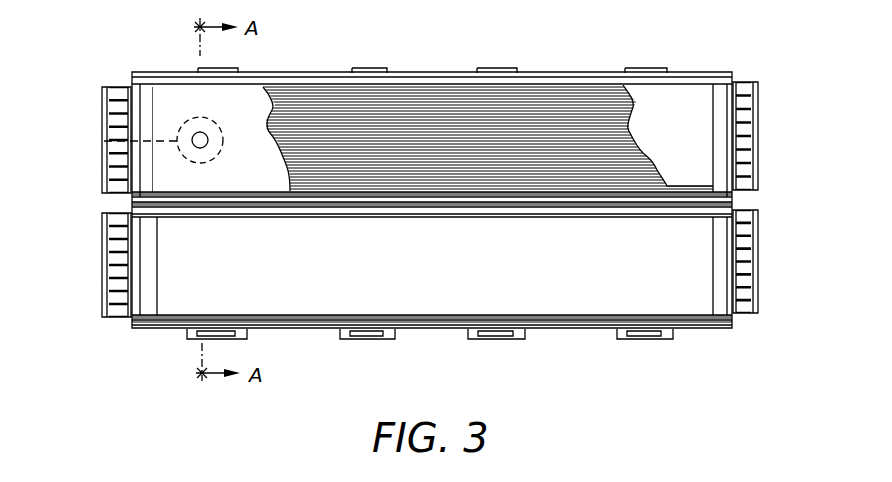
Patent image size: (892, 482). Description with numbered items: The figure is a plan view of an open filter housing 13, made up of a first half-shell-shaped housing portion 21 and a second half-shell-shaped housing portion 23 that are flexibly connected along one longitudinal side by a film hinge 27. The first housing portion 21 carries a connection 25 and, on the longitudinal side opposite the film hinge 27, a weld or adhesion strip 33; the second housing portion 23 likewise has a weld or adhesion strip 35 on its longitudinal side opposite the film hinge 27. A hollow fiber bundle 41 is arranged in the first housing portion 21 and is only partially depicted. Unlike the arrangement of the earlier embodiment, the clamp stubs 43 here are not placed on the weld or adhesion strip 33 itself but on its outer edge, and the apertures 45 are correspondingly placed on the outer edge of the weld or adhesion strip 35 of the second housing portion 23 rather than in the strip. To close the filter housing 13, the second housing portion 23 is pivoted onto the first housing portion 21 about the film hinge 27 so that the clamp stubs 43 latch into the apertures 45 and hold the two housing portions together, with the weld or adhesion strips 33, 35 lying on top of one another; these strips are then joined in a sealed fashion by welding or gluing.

The filter housing 13 is at (135, 52).
The first half-shell-shaped housing portion 21 is at (700, 96).
The second half-shell-shaped housing portion 23 is at (172, 271).
The connection 25 is at (104, 141).
The film hinge 27 is at (134, 205).
The weld or adhesion strip 33 is at (590, 72).
The weld or adhesion strip 35 is at (323, 329).
The hollow fiber bundle 41 is at (445, 100).
The clamp stubs 43 is at (212, 67).
The apertures 45 is at (188, 340).